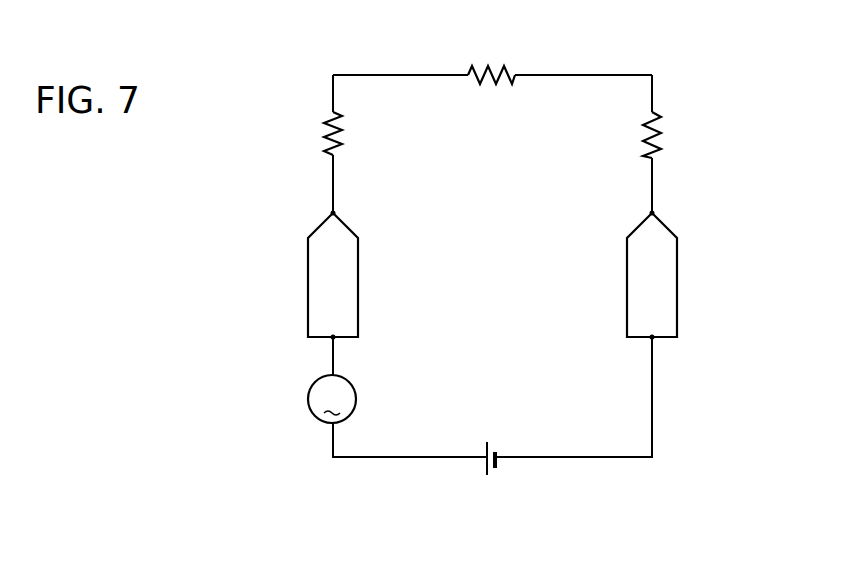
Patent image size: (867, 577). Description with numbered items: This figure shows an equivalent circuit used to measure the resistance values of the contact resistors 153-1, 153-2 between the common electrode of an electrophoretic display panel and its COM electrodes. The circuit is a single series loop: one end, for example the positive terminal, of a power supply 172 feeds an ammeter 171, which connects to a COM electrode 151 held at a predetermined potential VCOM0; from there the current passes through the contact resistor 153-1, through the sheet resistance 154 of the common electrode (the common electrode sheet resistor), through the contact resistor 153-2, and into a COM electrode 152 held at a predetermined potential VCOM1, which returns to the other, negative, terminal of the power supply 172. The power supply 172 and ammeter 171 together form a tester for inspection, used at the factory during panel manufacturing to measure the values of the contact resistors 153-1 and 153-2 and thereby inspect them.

The COM electrode 151 is at (359, 302).
The COM electrode 152 is at (678, 304).
The contact resistor 153-1 is at (343, 146).
The contact resistor 153-2 is at (662, 130).
The sheet resistance of the common electrode 154 is at (497, 87).
The ammeter 171 is at (356, 398).
The power supply 172 is at (484, 450).